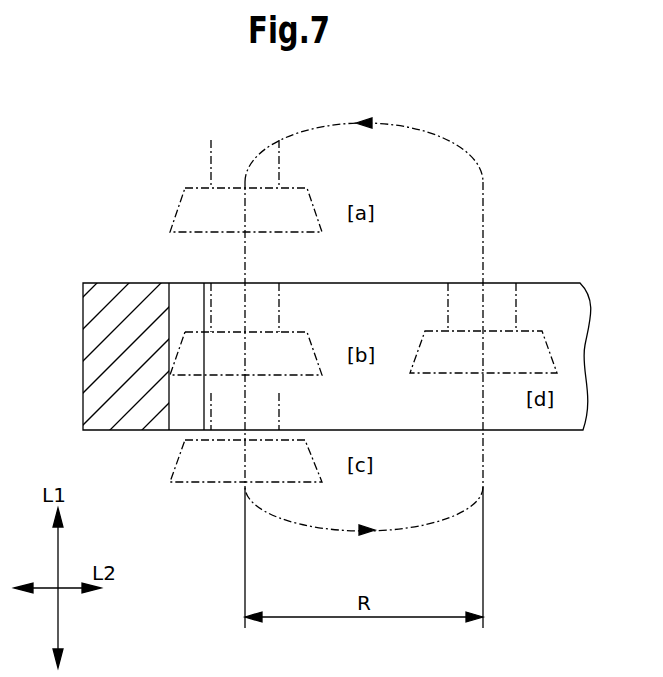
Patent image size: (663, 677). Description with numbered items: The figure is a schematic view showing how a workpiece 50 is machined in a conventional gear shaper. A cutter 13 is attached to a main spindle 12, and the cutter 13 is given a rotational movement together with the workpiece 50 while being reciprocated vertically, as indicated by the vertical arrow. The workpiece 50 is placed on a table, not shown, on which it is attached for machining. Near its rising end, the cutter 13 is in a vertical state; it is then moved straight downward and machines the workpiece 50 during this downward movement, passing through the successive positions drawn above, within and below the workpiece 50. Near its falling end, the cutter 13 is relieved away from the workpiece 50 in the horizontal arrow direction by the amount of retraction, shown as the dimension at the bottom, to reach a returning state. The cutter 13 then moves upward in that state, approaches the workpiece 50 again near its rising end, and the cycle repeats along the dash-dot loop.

The main spindle 12 is at (209, 150).
The cutter 13 is at (178, 188).
The workpiece 50 is at (105, 283).